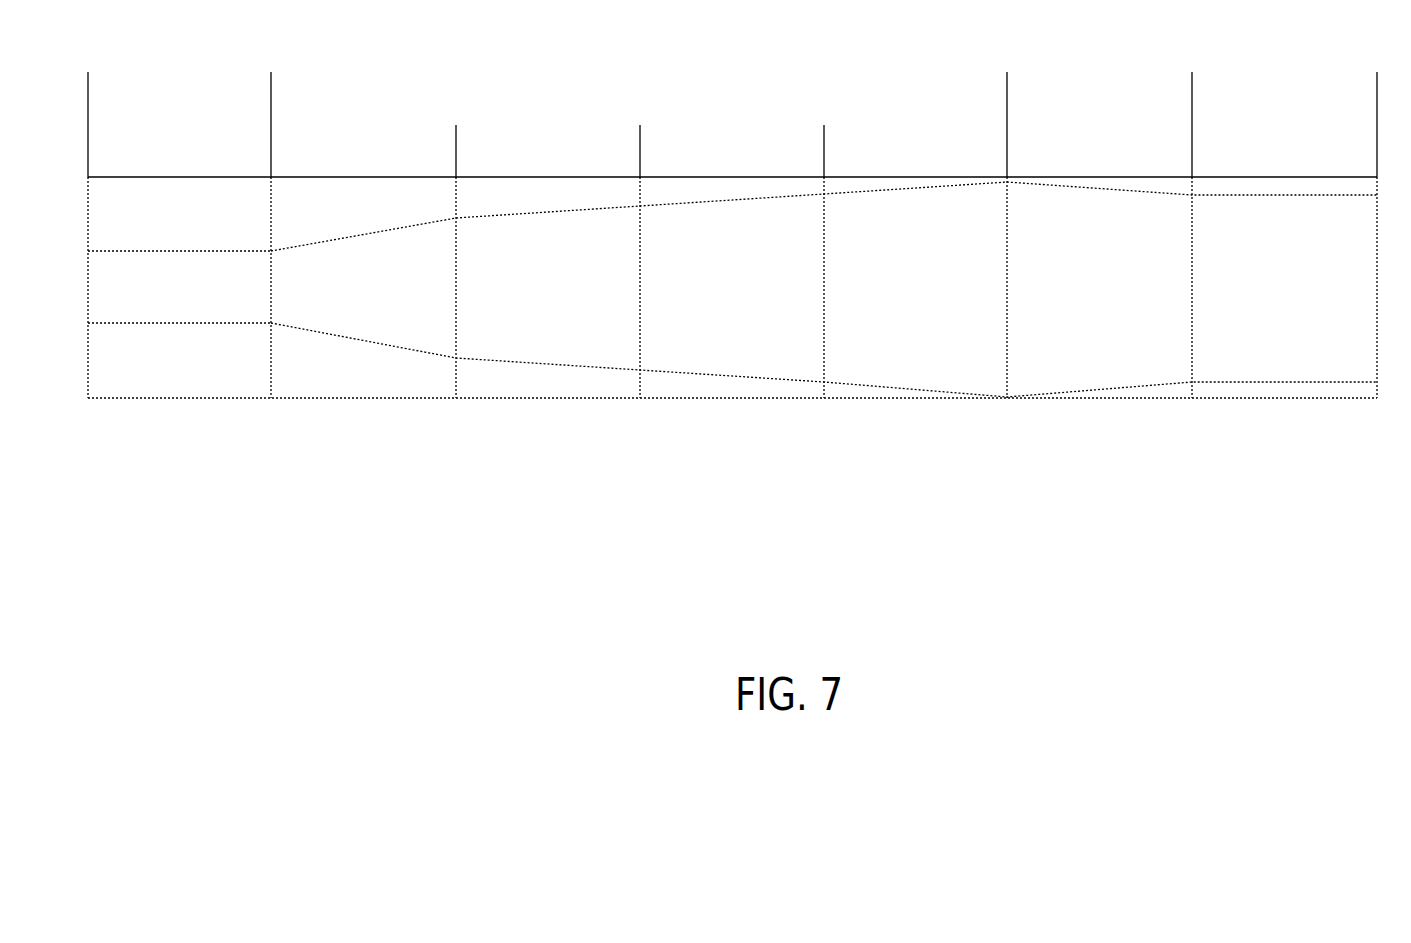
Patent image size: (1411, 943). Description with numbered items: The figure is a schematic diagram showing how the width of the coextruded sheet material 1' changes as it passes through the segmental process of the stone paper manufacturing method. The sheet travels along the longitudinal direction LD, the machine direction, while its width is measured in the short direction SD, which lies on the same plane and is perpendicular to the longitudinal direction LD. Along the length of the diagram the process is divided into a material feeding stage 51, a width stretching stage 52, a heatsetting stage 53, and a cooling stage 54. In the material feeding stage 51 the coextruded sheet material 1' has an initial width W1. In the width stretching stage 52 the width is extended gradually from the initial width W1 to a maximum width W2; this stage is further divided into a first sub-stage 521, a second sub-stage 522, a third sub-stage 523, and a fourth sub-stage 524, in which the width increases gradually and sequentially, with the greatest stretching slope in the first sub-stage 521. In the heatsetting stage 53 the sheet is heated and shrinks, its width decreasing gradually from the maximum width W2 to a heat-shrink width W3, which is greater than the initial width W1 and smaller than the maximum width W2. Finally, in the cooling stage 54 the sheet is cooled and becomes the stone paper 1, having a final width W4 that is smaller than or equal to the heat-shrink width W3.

The stone paper 1 is at (825, 383).
The coextruded sheet material 1' is at (200, 422).
The material feeding stage 51 is at (88, 93).
The width stretching stage 52 is at (271, 93).
The first sub-stage 521 is at (456, 148).
The second sub-stage 522 is at (640, 148).
The third sub-stage 523 is at (824, 148).
The fourth sub-stage 524 is at (1007, 148).
The heatsetting stage 53 is at (1192, 93).
The cooling stage 54 is at (1377, 93).
The initial width W1 is at (271, 251).
The maximum width W2 is at (1007, 182).
The heat-shrink width W3 is at (1192, 195).
The final width W4 is at (1377, 195).
The longitudinal direction LD is at (698, 480).
The short direction SD is at (698, 480).